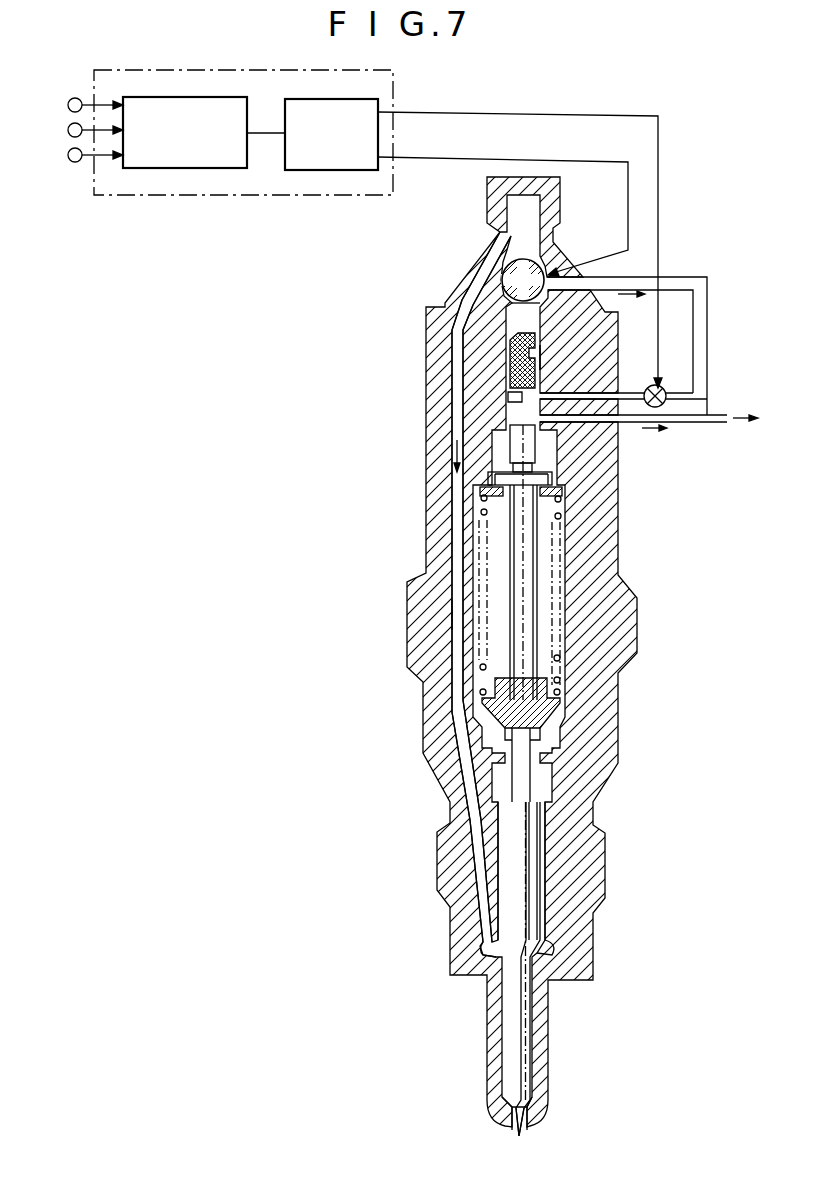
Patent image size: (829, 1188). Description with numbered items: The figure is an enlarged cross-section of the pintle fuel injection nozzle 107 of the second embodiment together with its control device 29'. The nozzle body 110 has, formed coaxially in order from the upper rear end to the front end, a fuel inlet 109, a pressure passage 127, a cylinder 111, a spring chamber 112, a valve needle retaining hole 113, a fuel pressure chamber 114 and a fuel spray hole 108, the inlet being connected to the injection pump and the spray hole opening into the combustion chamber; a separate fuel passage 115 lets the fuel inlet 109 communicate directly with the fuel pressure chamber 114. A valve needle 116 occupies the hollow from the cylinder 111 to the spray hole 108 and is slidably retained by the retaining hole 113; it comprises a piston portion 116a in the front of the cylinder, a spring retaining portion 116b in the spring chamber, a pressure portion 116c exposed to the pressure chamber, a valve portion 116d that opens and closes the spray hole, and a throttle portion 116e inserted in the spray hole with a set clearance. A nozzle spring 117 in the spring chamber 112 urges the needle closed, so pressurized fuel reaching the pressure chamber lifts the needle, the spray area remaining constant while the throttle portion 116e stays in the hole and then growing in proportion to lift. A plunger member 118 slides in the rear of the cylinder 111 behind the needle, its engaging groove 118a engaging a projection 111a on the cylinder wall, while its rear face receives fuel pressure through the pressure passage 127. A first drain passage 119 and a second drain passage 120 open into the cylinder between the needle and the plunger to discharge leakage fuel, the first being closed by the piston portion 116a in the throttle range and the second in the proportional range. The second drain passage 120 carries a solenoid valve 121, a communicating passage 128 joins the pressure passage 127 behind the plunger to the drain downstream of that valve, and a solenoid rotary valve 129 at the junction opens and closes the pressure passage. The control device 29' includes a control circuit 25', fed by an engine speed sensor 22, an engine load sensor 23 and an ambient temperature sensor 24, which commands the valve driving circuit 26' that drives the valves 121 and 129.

The engine speed sensor 22 is at (68, 105).
The engine load sensor 23 is at (68, 130).
The ambient temperature sensor 24 is at (68, 155).
The control circuit 25' is at (204, 166).
The valve driving circuit 26' is at (331, 167).
The control device 29' is at (243, 157).
The pintle fuel injection nozzle 107 is at (420, 455).
The fuel spray hole 108 is at (512, 1130).
The fuel inlet 109 is at (514, 186).
The nozzle body 110 is at (626, 540).
The cylinder 111 is at (506, 398).
The projection 111a is at (541, 358).
The spring chamber 112 is at (502, 540).
The valve needle retaining hole 113 is at (500, 866).
The fuel pressure chamber 114 is at (482, 950).
The fuel passage 115 is at (452, 615).
The valve needle 116 is at (556, 840).
The piston portion 116a is at (538, 446).
The spring retaining portion 116b is at (553, 710).
The pressure portion 116c is at (550, 944).
The valve portion 116d is at (547, 1111).
The throttle portion 116e is at (528, 1130).
The nozzle spring 117 is at (559, 660).
The plunger member 118 is at (508, 350).
The engaging groove 118a is at (541, 396).
The first drain passage 119 is at (686, 423).
The second drain passage 120 is at (693, 400).
The solenoid valve 121 is at (666, 392).
The pressure passage 127 is at (520, 240).
The communicating passage 128 is at (689, 277).
The solenoid rotary valve 129 is at (470, 300).